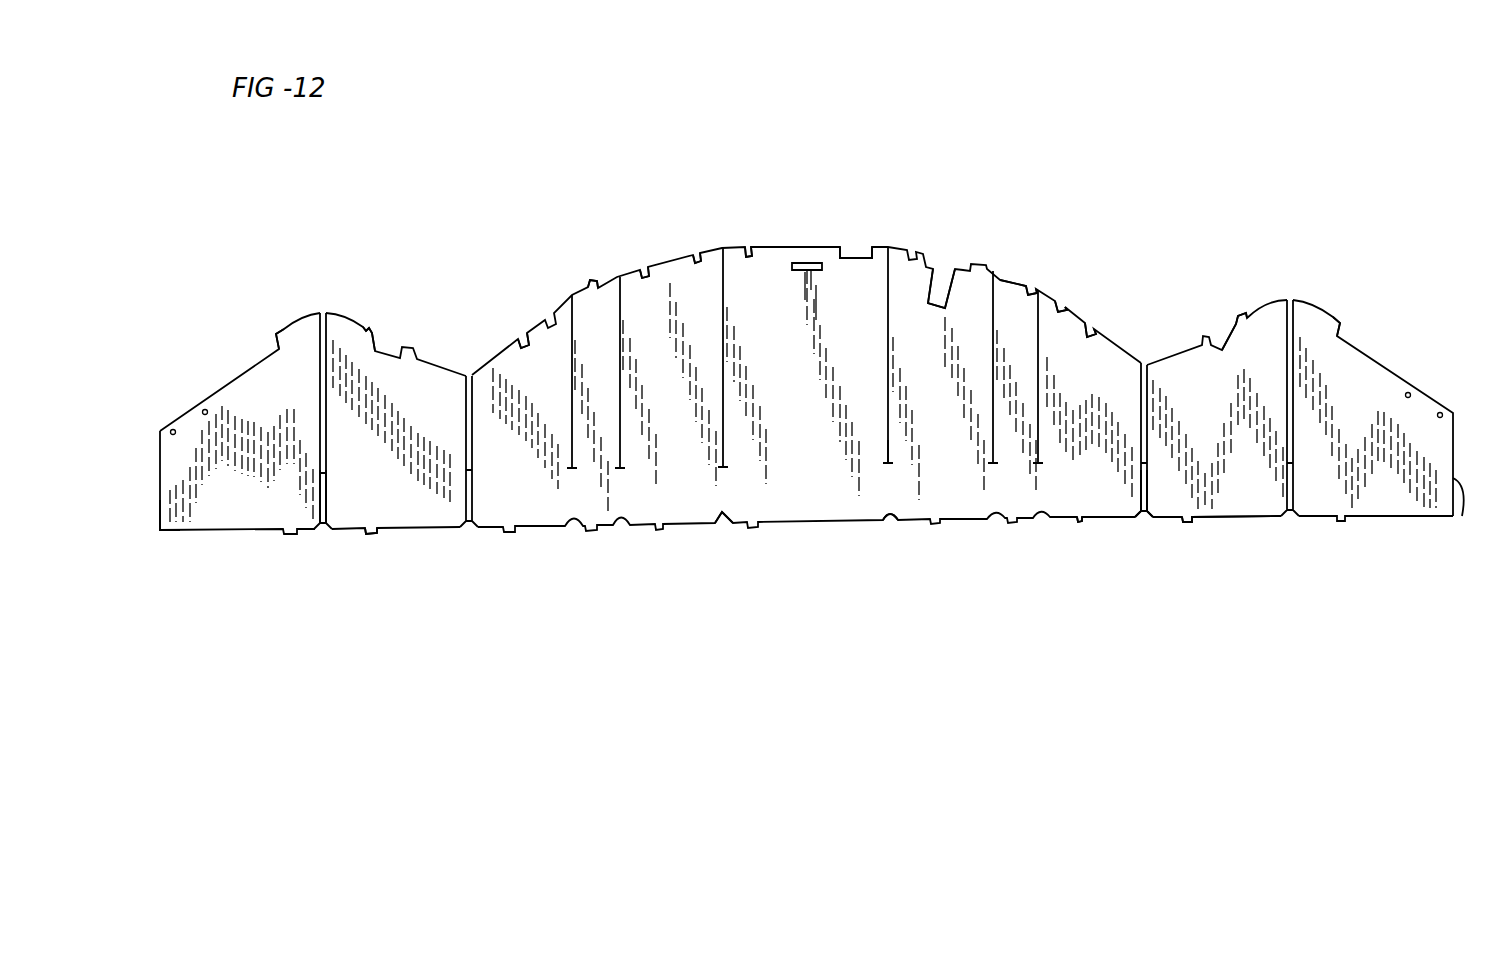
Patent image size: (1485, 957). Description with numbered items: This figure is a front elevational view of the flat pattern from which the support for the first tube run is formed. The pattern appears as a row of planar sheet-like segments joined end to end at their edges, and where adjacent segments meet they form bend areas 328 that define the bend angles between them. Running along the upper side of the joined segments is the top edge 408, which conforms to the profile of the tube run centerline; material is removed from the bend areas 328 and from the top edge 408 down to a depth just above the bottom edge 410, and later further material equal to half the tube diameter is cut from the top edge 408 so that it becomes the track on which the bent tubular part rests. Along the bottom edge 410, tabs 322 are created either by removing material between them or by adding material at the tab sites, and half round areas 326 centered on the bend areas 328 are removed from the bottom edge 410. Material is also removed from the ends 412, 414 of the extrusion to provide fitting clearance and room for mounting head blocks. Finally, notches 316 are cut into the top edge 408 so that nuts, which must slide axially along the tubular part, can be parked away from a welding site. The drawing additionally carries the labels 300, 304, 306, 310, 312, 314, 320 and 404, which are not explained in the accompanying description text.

The locating tab 300 is at (746, 248).
The aperture 304 is at (204, 408).
The aperture 306 is at (174, 430).
The notch 310 is at (606, 290).
The notch 312 is at (278, 346).
The tab 314 is at (940, 282).
The notches 316 is at (370, 338).
The locator 320 is at (802, 262).
The tabs 322 is at (380, 533).
The half round areas 326 is at (723, 518).
The bend areas 328 is at (326, 522).
The panel 404 is at (818, 397).
The top edge 408 is at (524, 337).
The bottom edge 410 is at (1237, 517).
The end 412 is at (165, 505).
The end 414 is at (1462, 518).